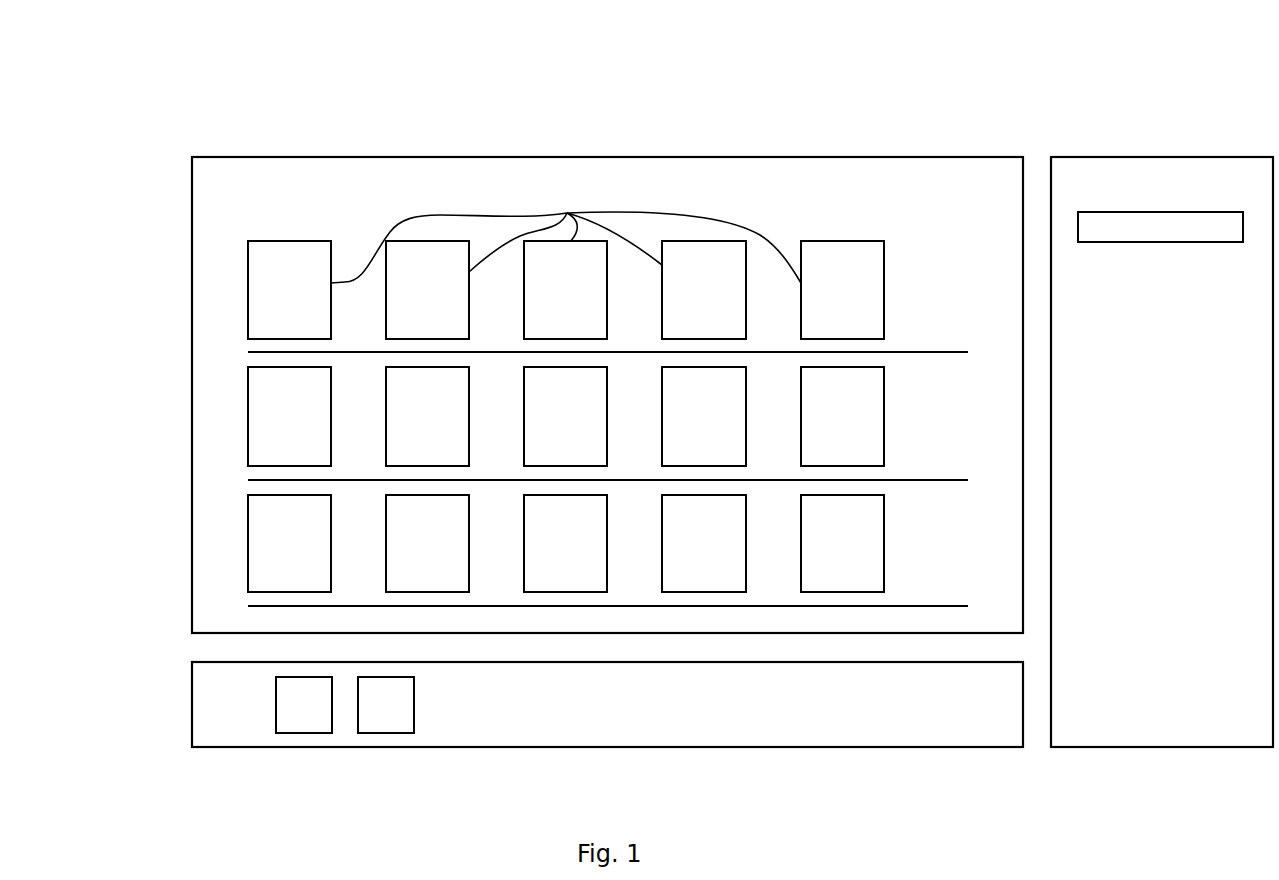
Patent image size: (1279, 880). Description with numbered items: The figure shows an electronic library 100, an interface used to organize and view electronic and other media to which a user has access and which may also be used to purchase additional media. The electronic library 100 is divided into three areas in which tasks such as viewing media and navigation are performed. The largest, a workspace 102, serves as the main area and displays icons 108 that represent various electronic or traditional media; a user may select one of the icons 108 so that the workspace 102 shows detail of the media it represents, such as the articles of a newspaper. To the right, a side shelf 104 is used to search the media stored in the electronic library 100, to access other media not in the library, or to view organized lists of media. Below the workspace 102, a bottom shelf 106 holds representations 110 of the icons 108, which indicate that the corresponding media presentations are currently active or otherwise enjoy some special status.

The electronic library 100 is at (188, 70).
The workspace 102 is at (537, 157).
The side shelf 104 is at (1107, 157).
The bottom shelf 106 is at (913, 747).
The icons 108 is at (566, 234).
The representations 110 is at (304, 733).